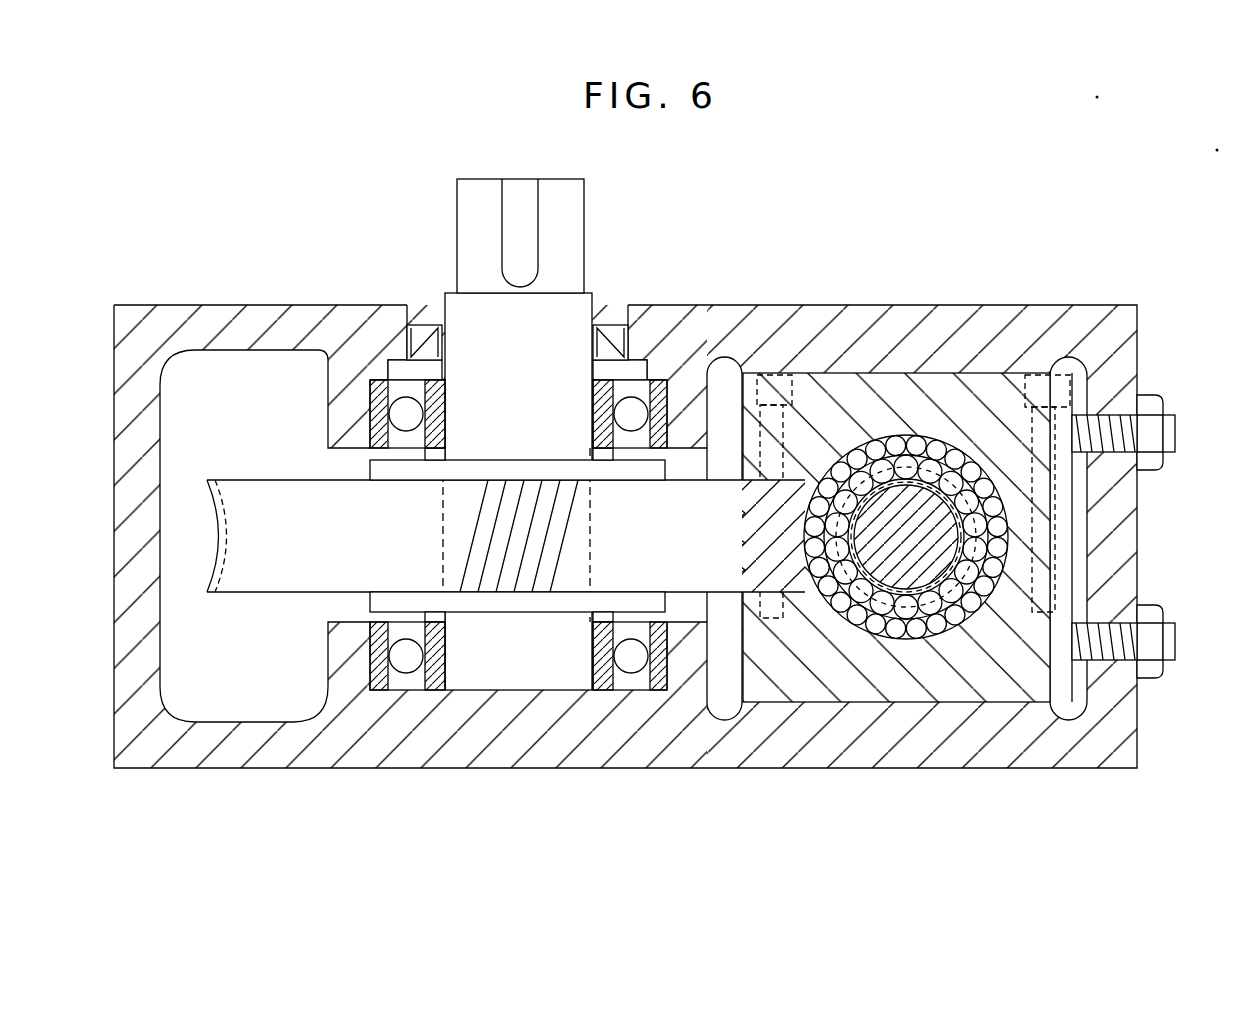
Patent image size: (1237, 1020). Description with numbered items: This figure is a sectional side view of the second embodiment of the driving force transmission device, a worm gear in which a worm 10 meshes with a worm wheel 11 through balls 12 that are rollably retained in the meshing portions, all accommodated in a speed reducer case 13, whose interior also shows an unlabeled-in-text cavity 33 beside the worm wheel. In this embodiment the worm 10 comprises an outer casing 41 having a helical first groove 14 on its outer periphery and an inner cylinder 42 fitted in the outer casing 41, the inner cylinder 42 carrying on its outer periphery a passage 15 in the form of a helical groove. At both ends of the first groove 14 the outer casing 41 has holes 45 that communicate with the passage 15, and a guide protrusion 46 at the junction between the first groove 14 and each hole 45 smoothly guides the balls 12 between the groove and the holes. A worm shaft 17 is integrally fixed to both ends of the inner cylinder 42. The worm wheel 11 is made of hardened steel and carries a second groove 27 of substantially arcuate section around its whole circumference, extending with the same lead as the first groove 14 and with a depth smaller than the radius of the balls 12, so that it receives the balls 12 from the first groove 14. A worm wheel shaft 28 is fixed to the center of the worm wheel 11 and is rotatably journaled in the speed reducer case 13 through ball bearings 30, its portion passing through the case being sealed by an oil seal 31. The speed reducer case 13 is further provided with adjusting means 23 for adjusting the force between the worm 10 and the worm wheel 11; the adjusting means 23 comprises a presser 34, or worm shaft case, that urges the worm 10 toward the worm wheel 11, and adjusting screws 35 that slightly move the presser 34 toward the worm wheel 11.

The worm 10 is at (923, 480).
The worm wheel 11 is at (238, 600).
The balls 12 is at (888, 465).
The speed reducer case 13 is at (792, 302).
The first groove 14 is at (988, 588).
The passage 15 is at (962, 492).
The worm shaft 17 is at (863, 635).
The adjusting means 23 is at (1154, 492).
The second groove 27 is at (475, 565).
The worm wheel shaft 28 is at (570, 225).
The ball bearings 30 is at (378, 422).
The oil seal 31 is at (412, 335).
The cavity 33 is at (190, 440).
The presser 34 is at (990, 385).
The adjusting screws 35 is at (1150, 440).
The outer casing 41 is at (930, 625).
The inner cylinder 42 is at (840, 598).
The holes 45 is at (906, 638).
The guide protrusion 46 is at (928, 472).